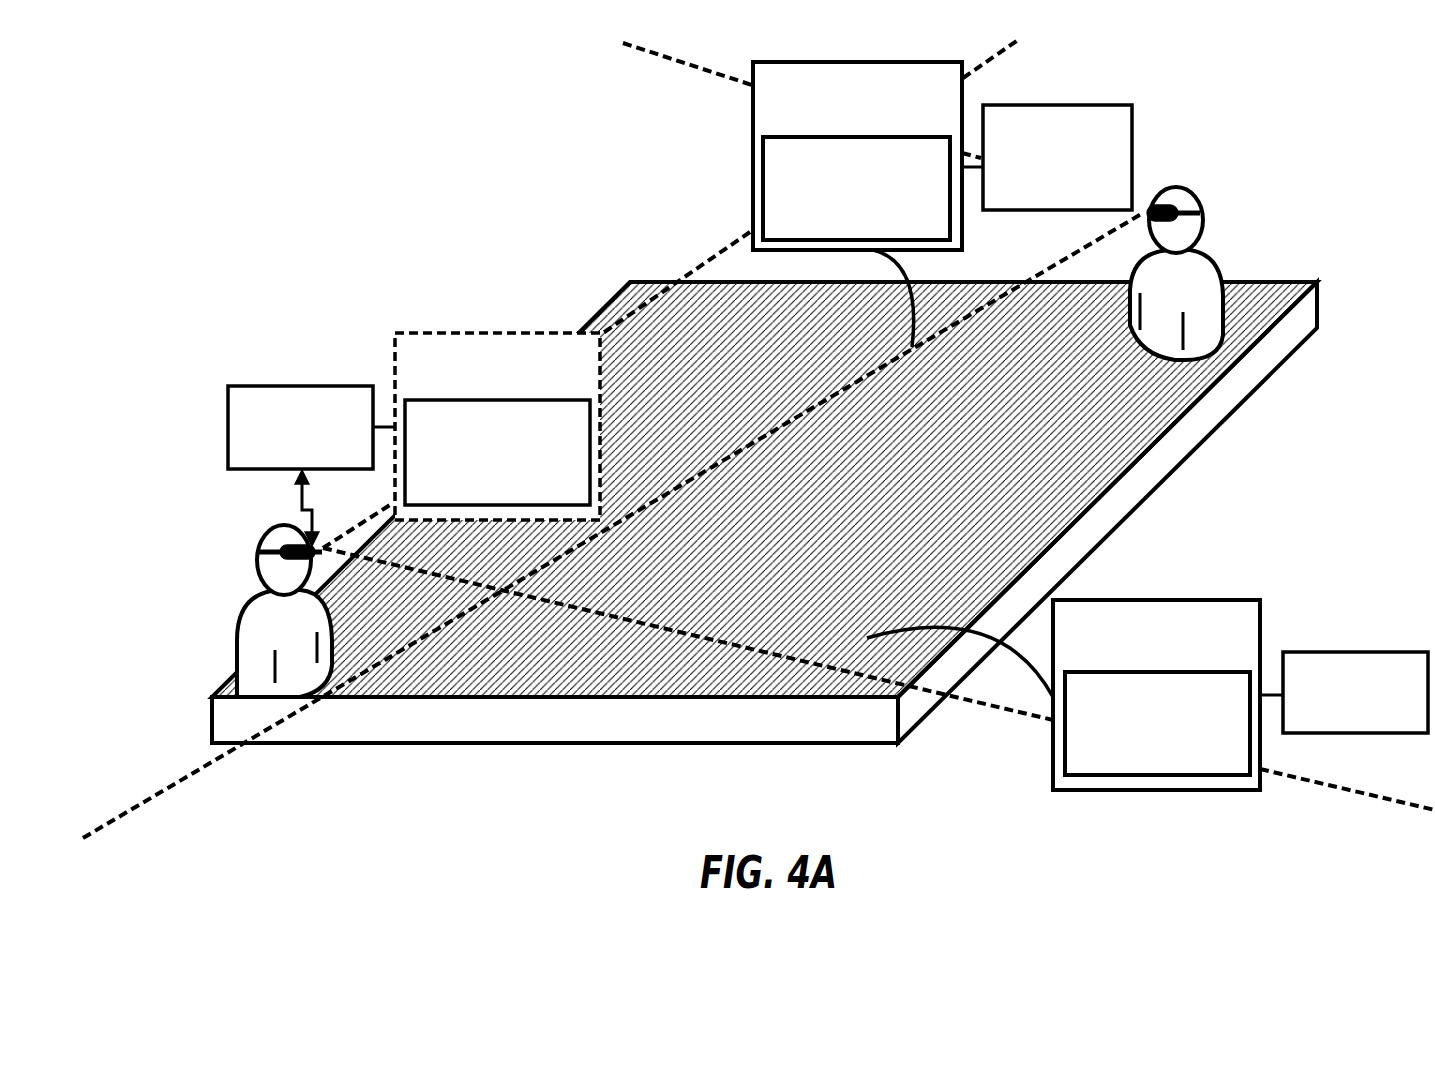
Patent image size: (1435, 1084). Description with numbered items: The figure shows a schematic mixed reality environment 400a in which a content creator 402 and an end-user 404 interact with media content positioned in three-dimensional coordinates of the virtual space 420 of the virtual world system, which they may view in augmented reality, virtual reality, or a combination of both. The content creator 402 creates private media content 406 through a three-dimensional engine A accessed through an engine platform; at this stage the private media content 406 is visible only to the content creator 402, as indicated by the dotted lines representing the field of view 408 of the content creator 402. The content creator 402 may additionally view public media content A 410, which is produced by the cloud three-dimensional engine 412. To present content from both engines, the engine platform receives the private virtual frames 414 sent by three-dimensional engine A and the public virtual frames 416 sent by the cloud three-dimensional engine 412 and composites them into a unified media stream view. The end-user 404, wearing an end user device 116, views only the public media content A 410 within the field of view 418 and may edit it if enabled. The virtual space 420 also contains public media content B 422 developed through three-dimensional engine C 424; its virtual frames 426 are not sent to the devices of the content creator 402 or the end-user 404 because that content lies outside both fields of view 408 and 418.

The mixed reality environment 400a is at (1318, 93).
The content creator 402 is at (265, 530).
The end-user 404 is at (1218, 246).
The private media content 406 is at (428, 400).
The field of view of the content creator 408 is at (637, 317).
The public media content A 410 is at (760, 175).
The cloud 3D engine 412 is at (1060, 105).
The private virtual frames 414 is at (522, 332).
The public virtual frames 416 is at (757, 213).
The field of view of the end-user 418 is at (1135, 210).
The virtual space 420 is at (1318, 298).
The public media content B 422 is at (1065, 742).
The 3D engine C 424 is at (1296, 652).
The virtual frames of public media content B 426 is at (1227, 600).
The end user device 116 is at (1143, 212).